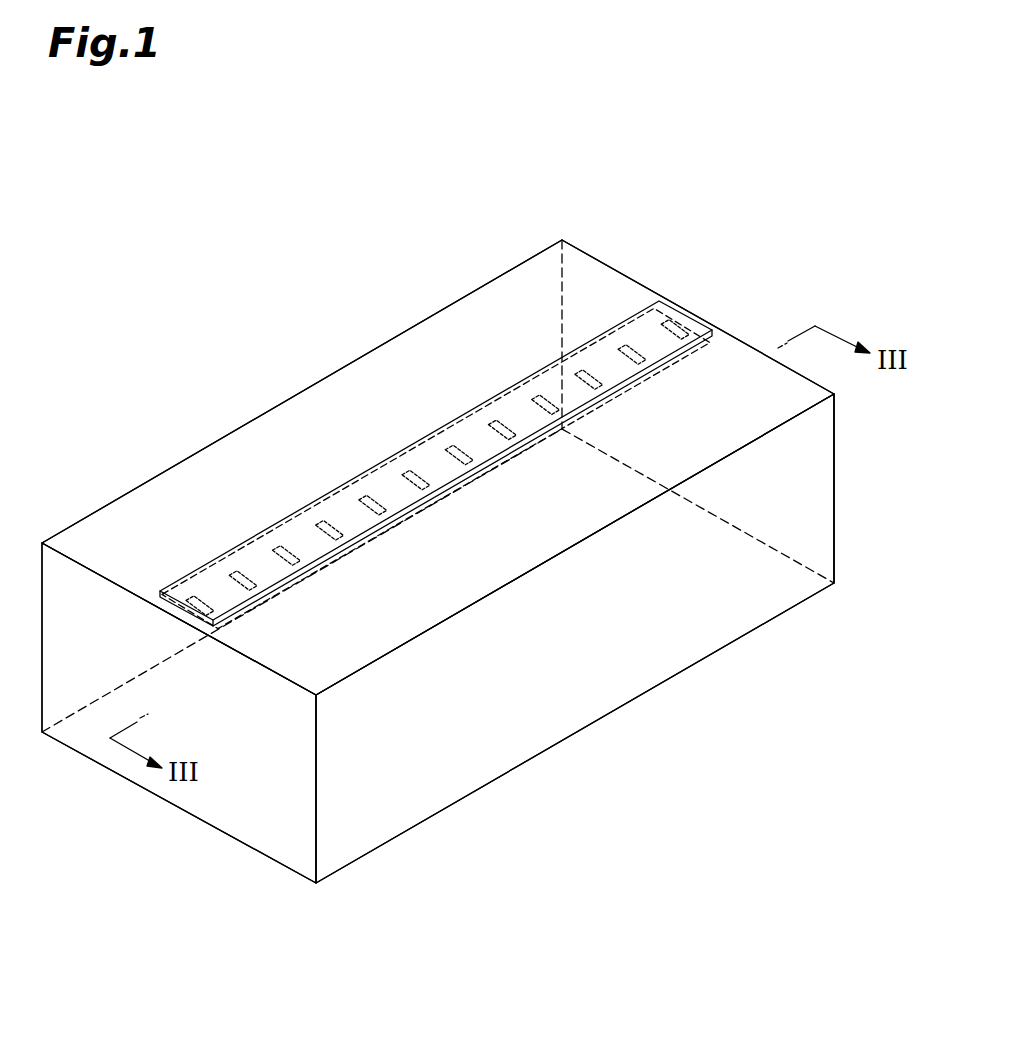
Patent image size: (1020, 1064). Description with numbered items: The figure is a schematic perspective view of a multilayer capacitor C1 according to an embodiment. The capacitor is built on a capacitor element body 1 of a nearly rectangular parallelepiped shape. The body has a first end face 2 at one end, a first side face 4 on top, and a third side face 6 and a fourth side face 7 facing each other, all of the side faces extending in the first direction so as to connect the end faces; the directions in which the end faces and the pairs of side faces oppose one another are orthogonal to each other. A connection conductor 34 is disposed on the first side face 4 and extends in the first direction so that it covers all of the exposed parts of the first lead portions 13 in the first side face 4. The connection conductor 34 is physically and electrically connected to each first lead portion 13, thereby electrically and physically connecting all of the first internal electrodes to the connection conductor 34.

The multilayer capacitor C1 is at (186, 288).
The capacitor element body 1 is at (788, 474).
The first end face 2 is at (237, 792).
The first side face 4 is at (372, 400).
The third side face 6 is at (208, 495).
The fourth side face 7 is at (613, 665).
The connection conductor 34 is at (512, 408).
The first lead portion 13 is at (703, 348).